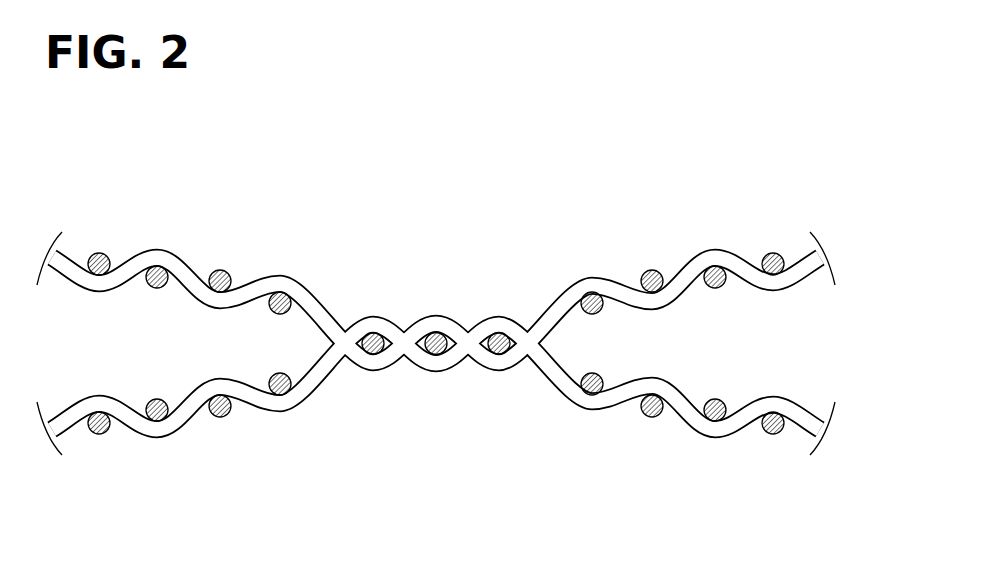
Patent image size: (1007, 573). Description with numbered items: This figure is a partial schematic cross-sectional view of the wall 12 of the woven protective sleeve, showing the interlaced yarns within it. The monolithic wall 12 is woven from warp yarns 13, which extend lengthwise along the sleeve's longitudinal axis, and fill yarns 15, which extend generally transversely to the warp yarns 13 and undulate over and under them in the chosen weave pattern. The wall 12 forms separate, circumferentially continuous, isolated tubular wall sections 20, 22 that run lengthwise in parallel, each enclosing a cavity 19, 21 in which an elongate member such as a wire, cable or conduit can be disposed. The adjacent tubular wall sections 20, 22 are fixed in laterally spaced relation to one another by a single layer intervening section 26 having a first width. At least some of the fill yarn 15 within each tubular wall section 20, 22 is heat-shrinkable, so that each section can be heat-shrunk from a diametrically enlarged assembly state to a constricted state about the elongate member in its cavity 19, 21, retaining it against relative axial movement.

The wall 12 is at (448, 305).
The warp yarns 13 is at (157, 266).
The fill yarns 15 is at (68, 272).
The cavity 19 is at (173, 323).
The tubular wall section 20 is at (78, 218).
The cavity 21 is at (730, 337).
The tubular wall section 22 is at (776, 475).
The single layer intervening section 26 is at (522, 240).